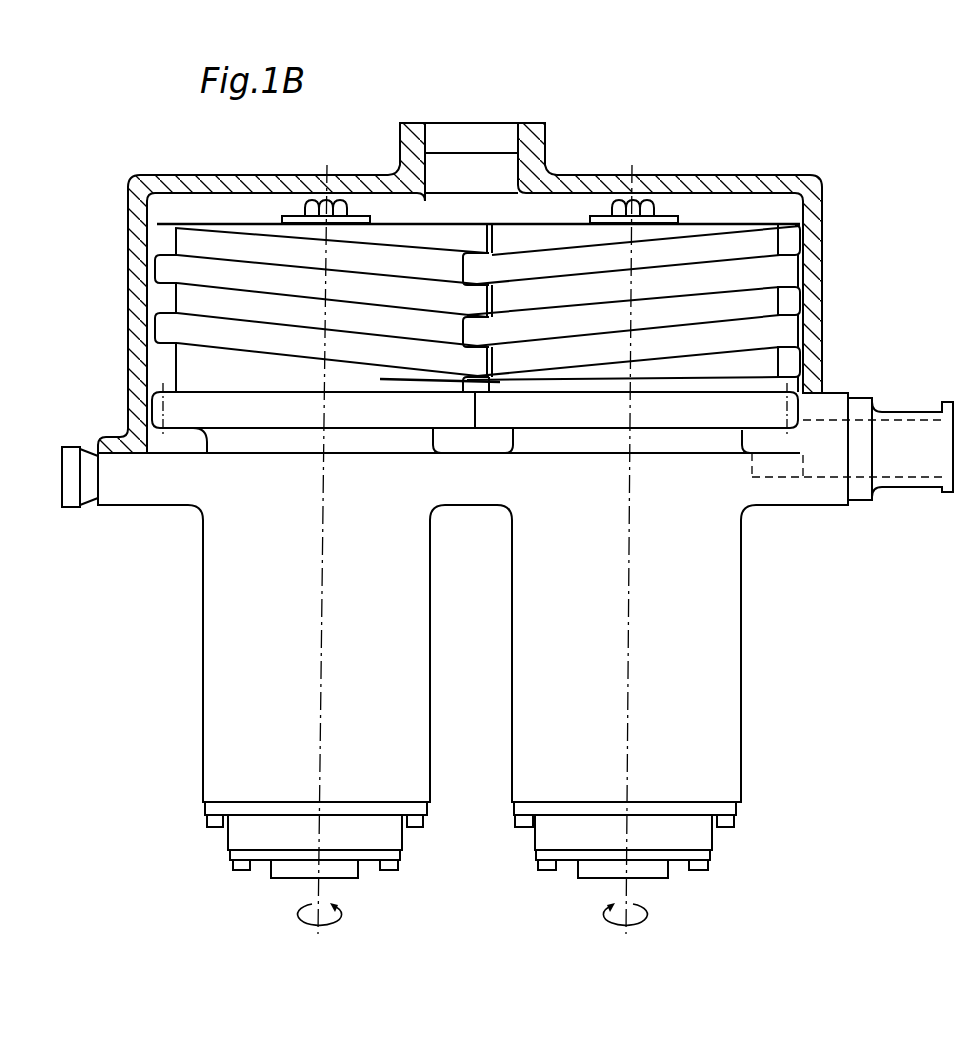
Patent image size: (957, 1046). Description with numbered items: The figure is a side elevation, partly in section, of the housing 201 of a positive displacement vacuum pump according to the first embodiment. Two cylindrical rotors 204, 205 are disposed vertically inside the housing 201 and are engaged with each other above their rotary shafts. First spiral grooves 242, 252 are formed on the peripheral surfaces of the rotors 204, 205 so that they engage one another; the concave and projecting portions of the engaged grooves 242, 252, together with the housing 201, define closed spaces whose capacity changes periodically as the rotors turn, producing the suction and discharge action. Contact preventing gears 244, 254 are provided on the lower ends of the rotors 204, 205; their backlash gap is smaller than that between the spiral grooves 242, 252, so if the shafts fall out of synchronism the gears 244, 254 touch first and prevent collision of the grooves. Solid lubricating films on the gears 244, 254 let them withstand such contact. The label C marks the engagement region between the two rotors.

The housing 201 is at (818, 210).
The cylindrical rotor 204 is at (727, 220).
The cylindrical rotor 205 is at (260, 222).
The first spiral groove 242 is at (808, 283).
The contact preventing gear 244 is at (790, 418).
The first spiral groove 252 is at (162, 304).
The contact preventing gear 254 is at (152, 408).
The central gap C is at (499, 216).